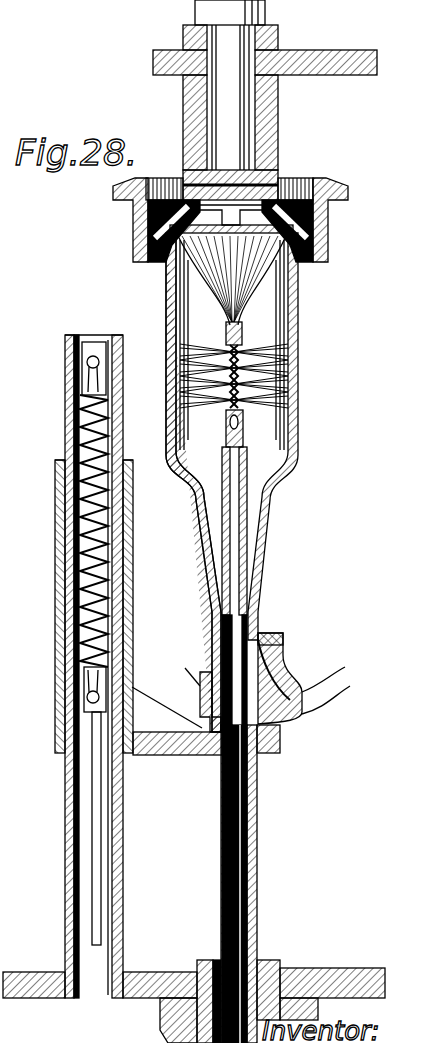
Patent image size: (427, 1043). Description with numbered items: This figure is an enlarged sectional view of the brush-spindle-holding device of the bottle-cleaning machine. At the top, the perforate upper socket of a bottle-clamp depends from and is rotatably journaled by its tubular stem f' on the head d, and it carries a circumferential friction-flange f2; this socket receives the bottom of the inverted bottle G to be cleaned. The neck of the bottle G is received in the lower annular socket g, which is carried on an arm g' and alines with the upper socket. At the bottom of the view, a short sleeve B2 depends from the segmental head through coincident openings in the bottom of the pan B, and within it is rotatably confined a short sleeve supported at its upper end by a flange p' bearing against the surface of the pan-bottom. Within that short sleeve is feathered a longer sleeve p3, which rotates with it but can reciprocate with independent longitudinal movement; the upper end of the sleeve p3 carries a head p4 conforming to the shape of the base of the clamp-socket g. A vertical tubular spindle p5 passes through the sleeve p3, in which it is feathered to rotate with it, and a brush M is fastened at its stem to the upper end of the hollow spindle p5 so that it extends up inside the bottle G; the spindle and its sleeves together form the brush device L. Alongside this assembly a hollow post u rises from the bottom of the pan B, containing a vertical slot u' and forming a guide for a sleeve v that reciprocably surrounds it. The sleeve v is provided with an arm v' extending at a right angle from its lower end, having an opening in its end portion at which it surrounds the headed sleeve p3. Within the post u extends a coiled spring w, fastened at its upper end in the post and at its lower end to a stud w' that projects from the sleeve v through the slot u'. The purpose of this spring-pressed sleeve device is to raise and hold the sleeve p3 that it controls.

The head d is at (153, 62).
The tubular stem f' is at (260, 139).
The circumferential friction-flange f2 is at (347, 190).
The inverted bottle G is at (308, 340).
The brush M is at (248, 300).
The vertical tubular spindle p5 is at (237, 556).
The longer sleeve p3 is at (225, 918).
The lower annular socket g is at (176, 687).
The arm g' is at (294, 678).
The collar i is at (284, 634).
The brush device L is at (326, 737).
The head p4 is at (282, 740).
The arm v' is at (177, 767).
The hollow post u is at (74, 666).
The coiled spring w is at (103, 531).
The stud w' is at (60, 545).
The vertical slot u' is at (128, 828).
The sleeve v is at (109, 606).
The pan B is at (333, 965).
The flange p' is at (280, 960).
The short sleeve B2 is at (165, 1025).